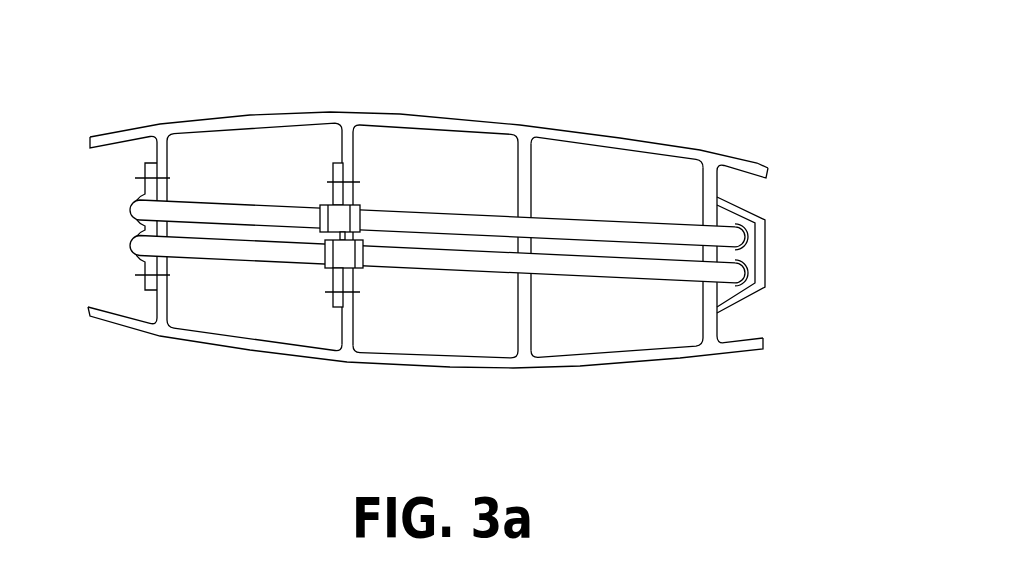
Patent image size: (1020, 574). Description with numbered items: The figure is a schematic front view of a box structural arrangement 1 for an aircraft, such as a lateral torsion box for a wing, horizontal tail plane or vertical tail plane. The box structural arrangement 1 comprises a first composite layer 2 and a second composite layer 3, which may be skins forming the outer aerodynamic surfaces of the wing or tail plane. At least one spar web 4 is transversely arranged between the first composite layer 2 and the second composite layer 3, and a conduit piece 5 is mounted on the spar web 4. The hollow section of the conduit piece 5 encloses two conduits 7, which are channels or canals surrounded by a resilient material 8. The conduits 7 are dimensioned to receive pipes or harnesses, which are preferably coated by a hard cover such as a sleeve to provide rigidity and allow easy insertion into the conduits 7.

The box structural arrangement 1 is at (395, 103).
The first composite layer 2 is at (550, 127).
The second composite layer 3 is at (525, 367).
The spar web 4 is at (525, 190).
The conduit piece 5 is at (760, 205).
The conduit 7 is at (747, 242).
The resilient material 8 is at (742, 287).